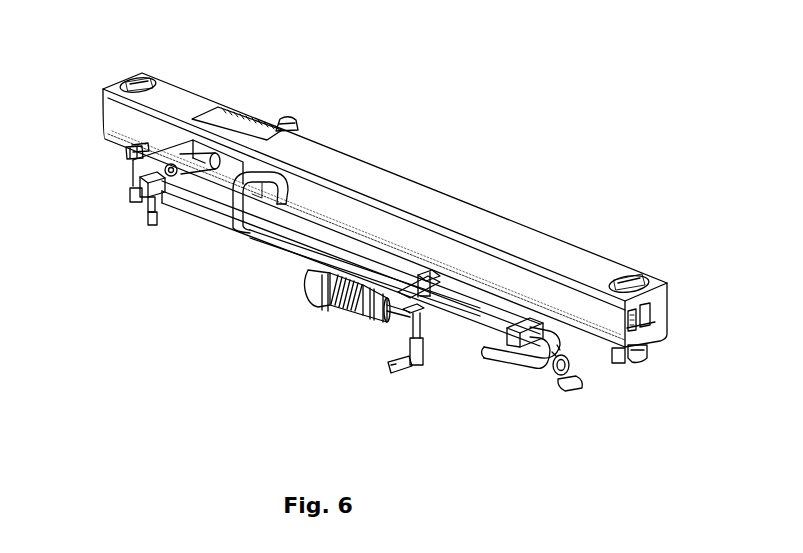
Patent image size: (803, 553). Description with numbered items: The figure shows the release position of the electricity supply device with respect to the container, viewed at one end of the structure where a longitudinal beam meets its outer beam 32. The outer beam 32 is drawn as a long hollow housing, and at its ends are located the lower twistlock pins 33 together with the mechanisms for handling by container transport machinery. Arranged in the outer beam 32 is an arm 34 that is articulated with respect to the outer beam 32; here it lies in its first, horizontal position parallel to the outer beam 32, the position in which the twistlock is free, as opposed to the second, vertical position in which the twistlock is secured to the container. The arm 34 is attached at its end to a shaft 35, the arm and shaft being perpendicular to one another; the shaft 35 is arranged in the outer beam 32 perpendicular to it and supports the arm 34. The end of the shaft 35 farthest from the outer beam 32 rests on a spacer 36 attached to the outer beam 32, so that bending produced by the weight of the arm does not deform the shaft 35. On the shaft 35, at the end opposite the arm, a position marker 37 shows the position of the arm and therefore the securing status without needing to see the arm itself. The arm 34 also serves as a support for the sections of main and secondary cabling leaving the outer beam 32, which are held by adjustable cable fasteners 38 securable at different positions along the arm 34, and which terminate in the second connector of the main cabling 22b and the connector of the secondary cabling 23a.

The second connector of the main cabling 22b is at (340, 310).
The connector of the secondary cabling 23a is at (580, 388).
The outer beam 32 is at (402, 195).
The lower twistlock pin 33 is at (643, 355).
The arm 34 is at (235, 233).
The shaft 35 is at (130, 153).
The spacer 36 is at (138, 173).
The position marker 37 is at (288, 118).
The adjustable cable fastener 38 is at (431, 273).